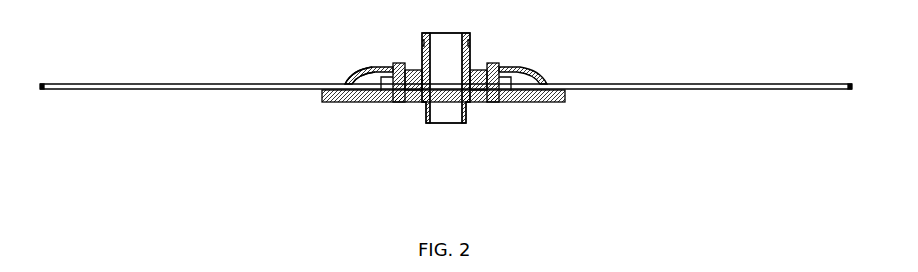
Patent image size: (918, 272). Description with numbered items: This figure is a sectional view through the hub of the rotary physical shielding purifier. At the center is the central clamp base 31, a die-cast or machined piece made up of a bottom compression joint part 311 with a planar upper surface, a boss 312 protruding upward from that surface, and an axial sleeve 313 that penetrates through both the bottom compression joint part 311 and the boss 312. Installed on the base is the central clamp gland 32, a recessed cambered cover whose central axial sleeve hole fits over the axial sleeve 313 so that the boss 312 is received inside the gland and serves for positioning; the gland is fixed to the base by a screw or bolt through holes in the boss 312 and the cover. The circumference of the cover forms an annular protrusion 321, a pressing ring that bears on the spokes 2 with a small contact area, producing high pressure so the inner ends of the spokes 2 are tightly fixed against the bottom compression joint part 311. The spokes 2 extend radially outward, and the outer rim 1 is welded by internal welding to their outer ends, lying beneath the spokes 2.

The outer rim 1 is at (848, 90).
The spoke 2 is at (165, 91).
The central clamp base 31 is at (375, 102).
The bottom compression joint part 311 is at (497, 103).
The boss 312 is at (490, 67).
The axial sleeve 313 is at (423, 106).
The central clamp gland 32 is at (377, 67).
The annular protrusion 321 is at (345, 83).